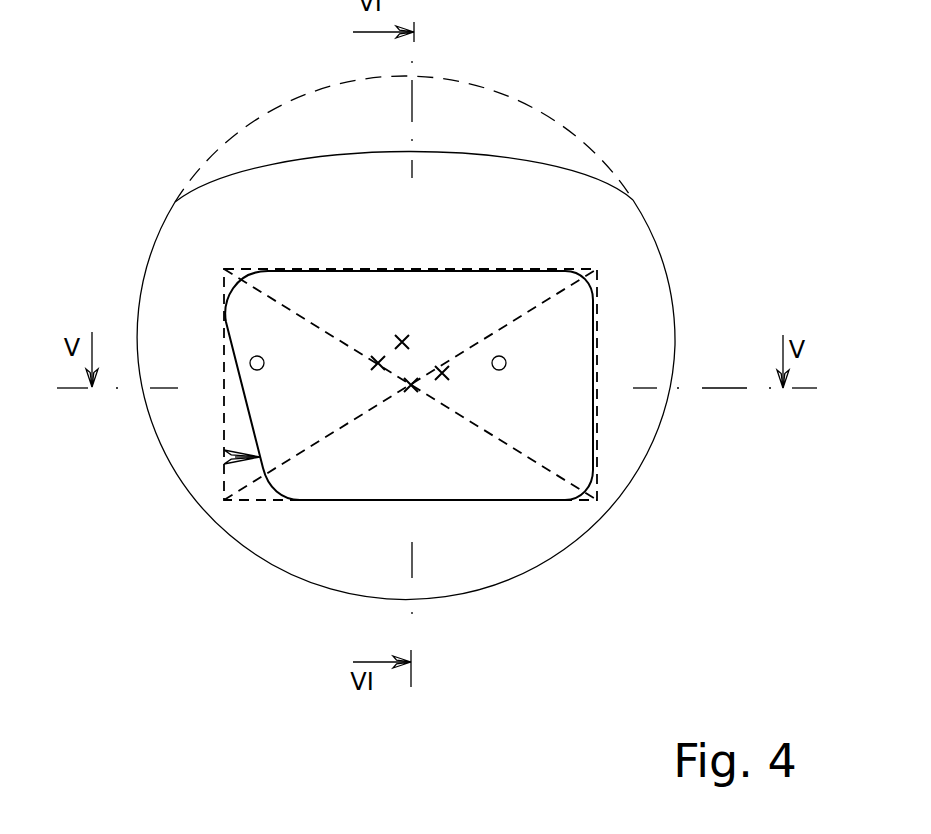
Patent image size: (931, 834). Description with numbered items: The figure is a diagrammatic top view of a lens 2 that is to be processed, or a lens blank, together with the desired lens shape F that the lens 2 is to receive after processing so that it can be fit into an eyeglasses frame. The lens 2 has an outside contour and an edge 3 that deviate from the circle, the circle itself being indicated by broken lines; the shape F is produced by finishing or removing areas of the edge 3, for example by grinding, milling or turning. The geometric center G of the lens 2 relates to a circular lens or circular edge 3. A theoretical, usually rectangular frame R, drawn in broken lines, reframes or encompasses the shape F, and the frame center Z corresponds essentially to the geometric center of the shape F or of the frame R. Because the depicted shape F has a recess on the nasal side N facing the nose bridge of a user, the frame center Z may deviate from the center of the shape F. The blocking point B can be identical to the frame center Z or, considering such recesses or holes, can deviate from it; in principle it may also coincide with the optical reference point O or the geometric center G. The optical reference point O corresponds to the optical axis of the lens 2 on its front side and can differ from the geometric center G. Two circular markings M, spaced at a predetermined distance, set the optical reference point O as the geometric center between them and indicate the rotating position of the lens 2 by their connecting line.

The lens 2 is at (662, 250).
The edge 3 is at (673, 300).
The geometric center G is at (410, 342).
The markings M is at (250, 361).
The nasal side N is at (240, 390).
The frame R is at (223, 428).
The shape F is at (235, 457).
The blocking point B is at (447, 374).
The optical reference point O is at (372, 364).
The frame center Z is at (414, 386).